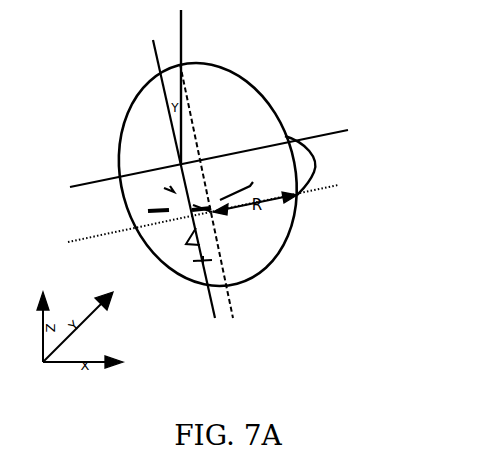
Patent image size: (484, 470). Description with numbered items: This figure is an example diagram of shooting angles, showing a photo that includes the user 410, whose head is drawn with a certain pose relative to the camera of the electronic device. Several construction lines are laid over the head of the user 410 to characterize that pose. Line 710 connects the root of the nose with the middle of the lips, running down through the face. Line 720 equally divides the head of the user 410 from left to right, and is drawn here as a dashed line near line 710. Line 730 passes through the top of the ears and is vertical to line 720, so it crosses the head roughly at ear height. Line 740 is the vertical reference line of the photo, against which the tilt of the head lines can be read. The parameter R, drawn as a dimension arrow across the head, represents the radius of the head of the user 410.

The user 410 is at (272, 98).
The line connecting root of nose with middle of lips 710 is at (157, 58).
The line equally dividing the head from left to right 720 is at (195, 128).
The line through top of the ears 730 is at (337, 131).
The vertical reference line of the photo 740 is at (182, 19).